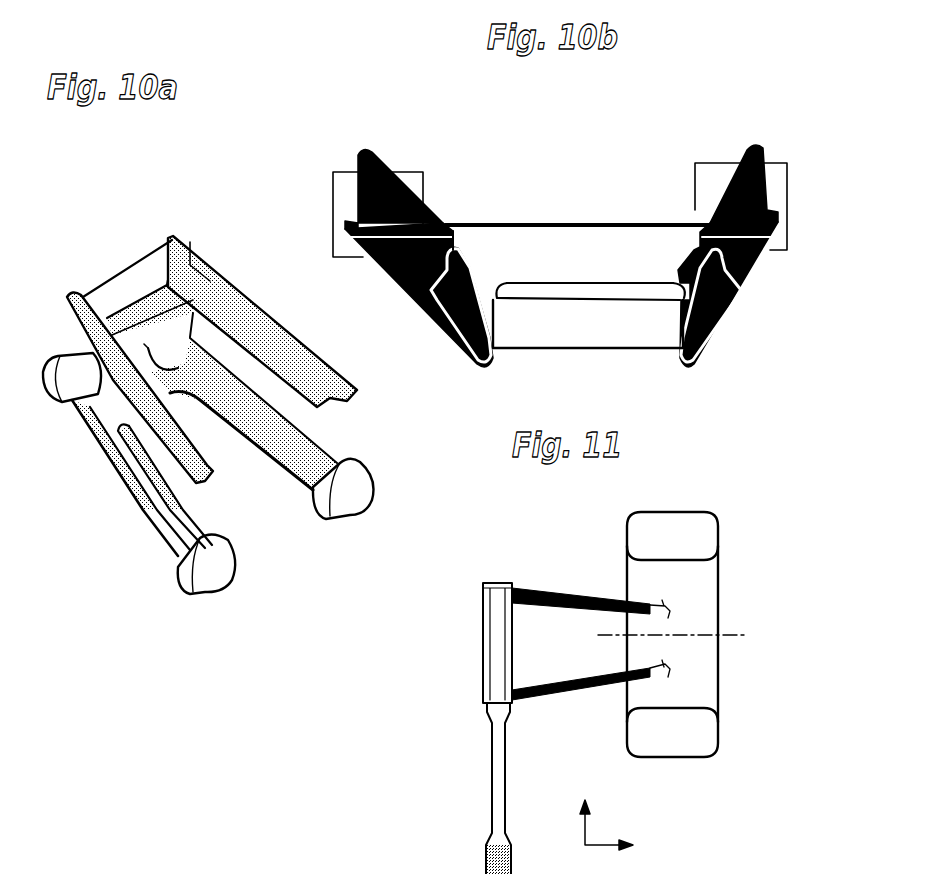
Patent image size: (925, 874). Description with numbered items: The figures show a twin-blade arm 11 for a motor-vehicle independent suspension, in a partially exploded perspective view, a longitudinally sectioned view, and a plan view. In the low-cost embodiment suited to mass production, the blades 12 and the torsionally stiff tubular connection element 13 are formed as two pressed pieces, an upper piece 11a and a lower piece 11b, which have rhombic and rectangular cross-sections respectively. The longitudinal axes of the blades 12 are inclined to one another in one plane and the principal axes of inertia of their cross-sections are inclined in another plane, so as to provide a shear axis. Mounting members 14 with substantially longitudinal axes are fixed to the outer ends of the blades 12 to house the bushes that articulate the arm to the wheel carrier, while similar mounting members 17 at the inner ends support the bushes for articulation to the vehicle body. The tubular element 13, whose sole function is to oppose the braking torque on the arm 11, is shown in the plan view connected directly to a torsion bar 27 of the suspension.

In FIG. 10B, the twin-blade arm 11 is at (625, 137).
In FIG. 11, the twin-blade arm 11 is at (567, 592).
In FIG. 10A, the upper piece 11a is at (263, 323).
In FIG. 10A, the lower piece 11b is at (140, 492).
In FIG. 10B, the blades 12 is at (440, 330).
In FIG. 10B, the tubular element 13 is at (574, 313).
In FIG. 11, the tubular element 13 is at (493, 647).
In FIG. 10A, the mounting members 14 is at (207, 572).
In FIG. 10A, the mounting members 17 is at (168, 357).
In FIG. 10B, the mounting members 17 is at (345, 192).
In FIG. 11, the torsion bar 27 is at (497, 780).